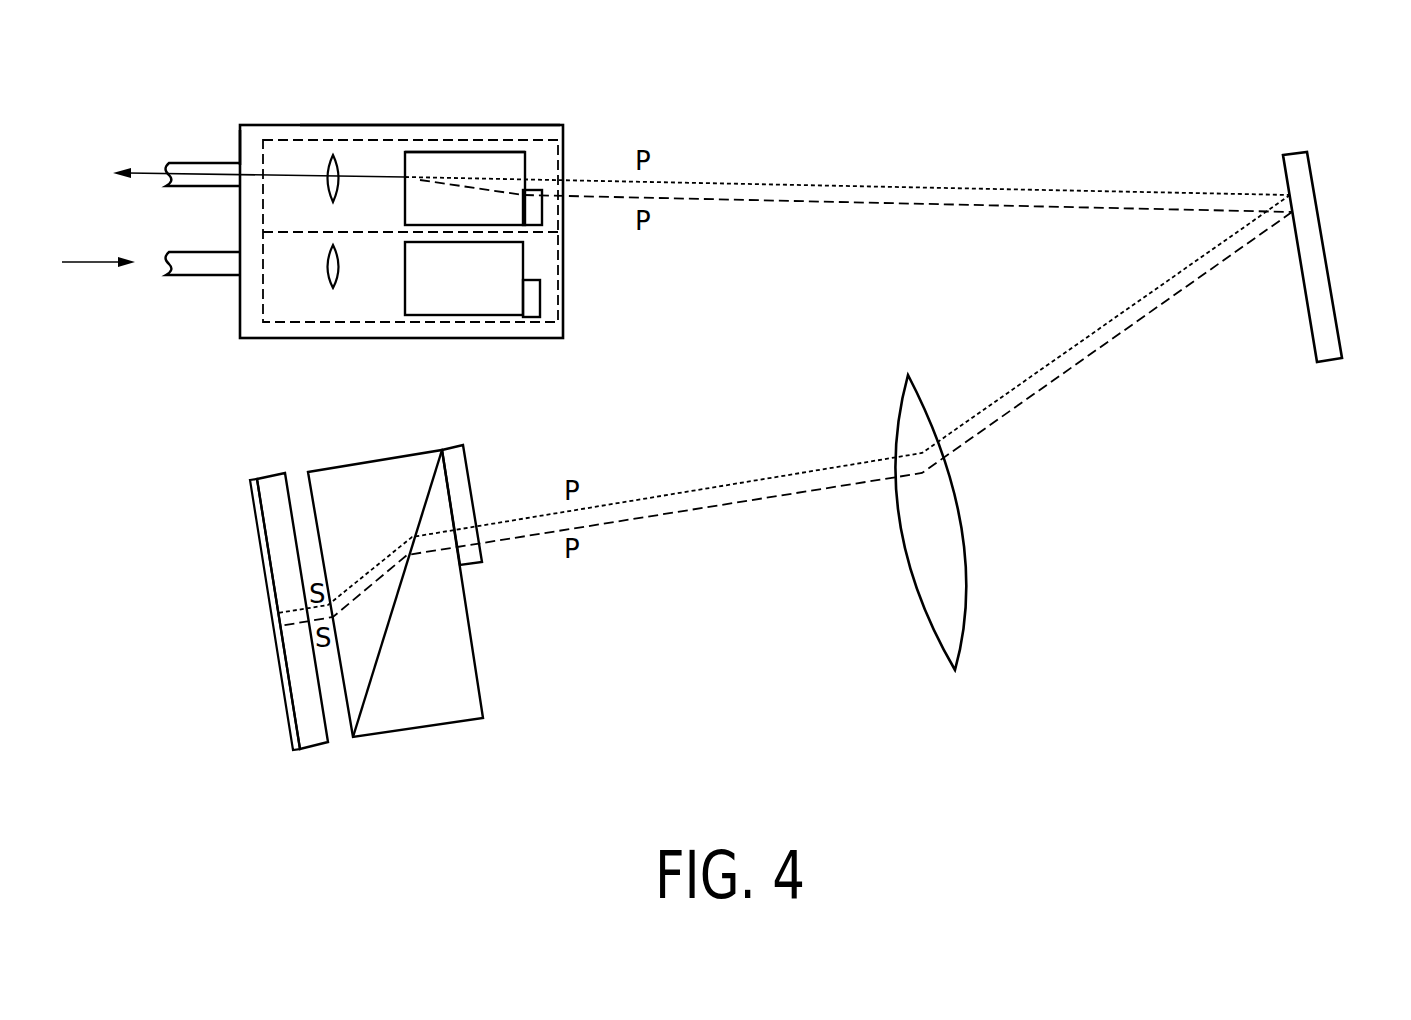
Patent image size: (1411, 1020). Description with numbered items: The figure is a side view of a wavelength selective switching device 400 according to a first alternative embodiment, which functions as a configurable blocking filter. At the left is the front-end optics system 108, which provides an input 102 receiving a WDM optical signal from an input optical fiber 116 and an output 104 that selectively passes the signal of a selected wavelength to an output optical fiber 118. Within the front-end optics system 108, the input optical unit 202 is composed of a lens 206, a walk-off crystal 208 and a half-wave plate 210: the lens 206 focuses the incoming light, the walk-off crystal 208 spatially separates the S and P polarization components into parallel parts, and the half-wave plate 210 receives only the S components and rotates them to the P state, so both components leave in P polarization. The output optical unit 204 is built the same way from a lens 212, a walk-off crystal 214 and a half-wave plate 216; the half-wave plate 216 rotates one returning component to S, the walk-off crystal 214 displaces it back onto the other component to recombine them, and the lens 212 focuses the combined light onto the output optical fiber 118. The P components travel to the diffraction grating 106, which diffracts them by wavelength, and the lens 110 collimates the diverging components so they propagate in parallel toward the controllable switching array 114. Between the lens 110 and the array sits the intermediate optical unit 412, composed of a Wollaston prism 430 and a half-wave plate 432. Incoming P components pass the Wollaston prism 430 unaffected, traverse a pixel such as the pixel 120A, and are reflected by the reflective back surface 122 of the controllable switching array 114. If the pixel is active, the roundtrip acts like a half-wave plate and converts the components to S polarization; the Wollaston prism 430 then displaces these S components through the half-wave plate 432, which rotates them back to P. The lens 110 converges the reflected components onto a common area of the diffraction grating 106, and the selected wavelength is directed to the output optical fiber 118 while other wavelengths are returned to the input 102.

The wavelength selective switching device 400 is at (1180, 52).
The input 102 is at (240, 313).
The output 104 is at (243, 167).
The front-end optics system 108 is at (372, 125).
The input optical unit 202 is at (393, 322).
The output optical fiber 118 is at (195, 163).
The input optical fiber 116 is at (197, 275).
The lens 212 is at (328, 175).
The lens 206 is at (325, 280).
The output optical unit 204 is at (428, 143).
The walk-off crystal 214 is at (495, 150).
The half-wave plate 216 is at (570, 210).
The walk-off crystal 208 is at (458, 315).
The half-wave plate 210 is at (537, 318).
The diffraction grating 106 is at (1293, 155).
The lens 110 is at (962, 625).
The controllable switching array 114 is at (255, 622).
The back surface 122 is at (257, 480).
The pixel 120A is at (295, 688).
The intermediate optical unit 412 is at (403, 605).
The Wollaston prism 430 is at (350, 462).
The half-wave plate 432 is at (455, 440).